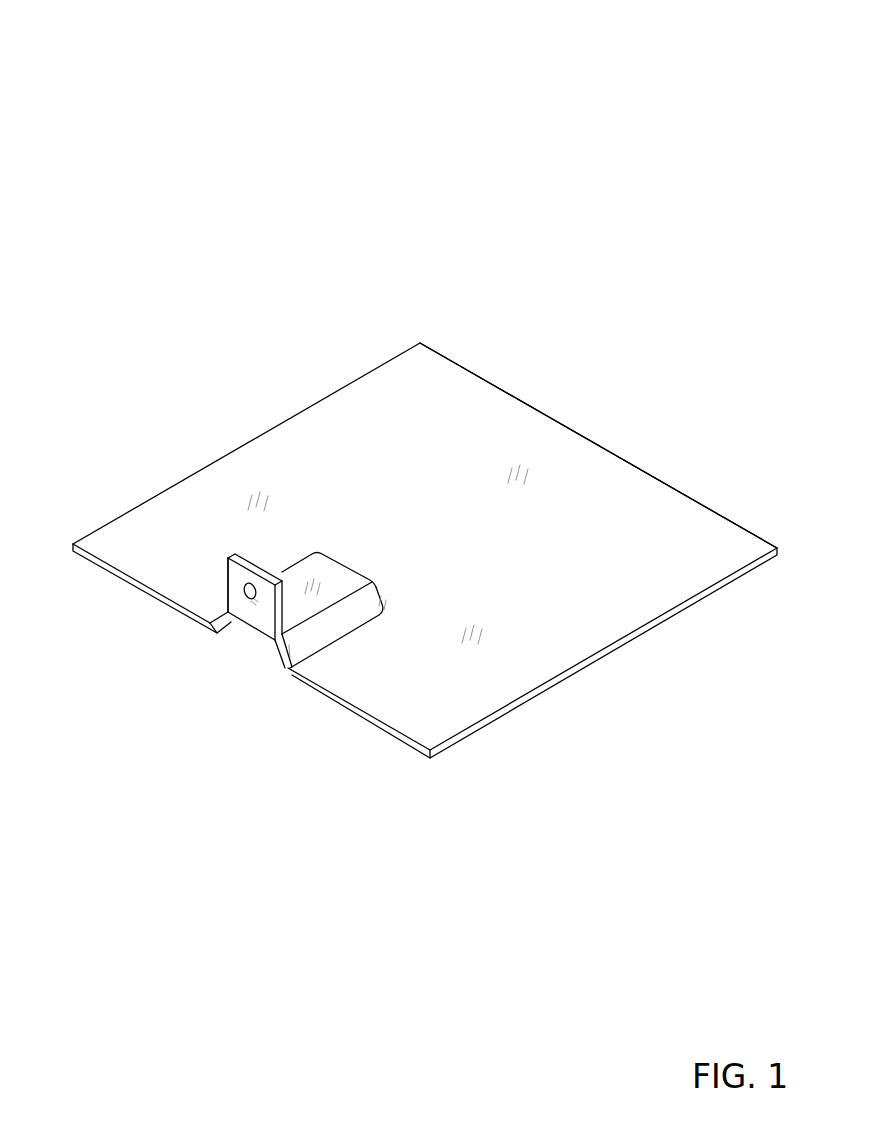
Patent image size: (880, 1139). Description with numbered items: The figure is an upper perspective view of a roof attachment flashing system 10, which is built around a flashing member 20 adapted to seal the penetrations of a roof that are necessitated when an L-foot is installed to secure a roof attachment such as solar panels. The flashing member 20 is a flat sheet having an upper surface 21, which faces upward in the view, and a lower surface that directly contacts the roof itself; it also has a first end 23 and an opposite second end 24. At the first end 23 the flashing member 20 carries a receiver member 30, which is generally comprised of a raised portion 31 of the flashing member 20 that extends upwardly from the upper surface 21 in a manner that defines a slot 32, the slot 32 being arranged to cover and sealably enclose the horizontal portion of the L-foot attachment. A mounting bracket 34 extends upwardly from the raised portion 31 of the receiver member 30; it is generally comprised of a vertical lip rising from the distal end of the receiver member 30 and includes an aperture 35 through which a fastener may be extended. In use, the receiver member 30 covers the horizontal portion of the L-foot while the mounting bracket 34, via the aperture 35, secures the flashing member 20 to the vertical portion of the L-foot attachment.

The roof attachment flashing system 10 is at (124, 84).
The flashing member 20 is at (504, 378).
The upper surface 21 is at (377, 398).
The first end 23 is at (155, 598).
The second end 24 is at (645, 473).
The receiver member 30 is at (290, 577).
The raised portion 31 is at (312, 633).
The slot 32 is at (231, 616).
The mounting bracket 34 is at (230, 573).
The aperture 35 is at (246, 592).